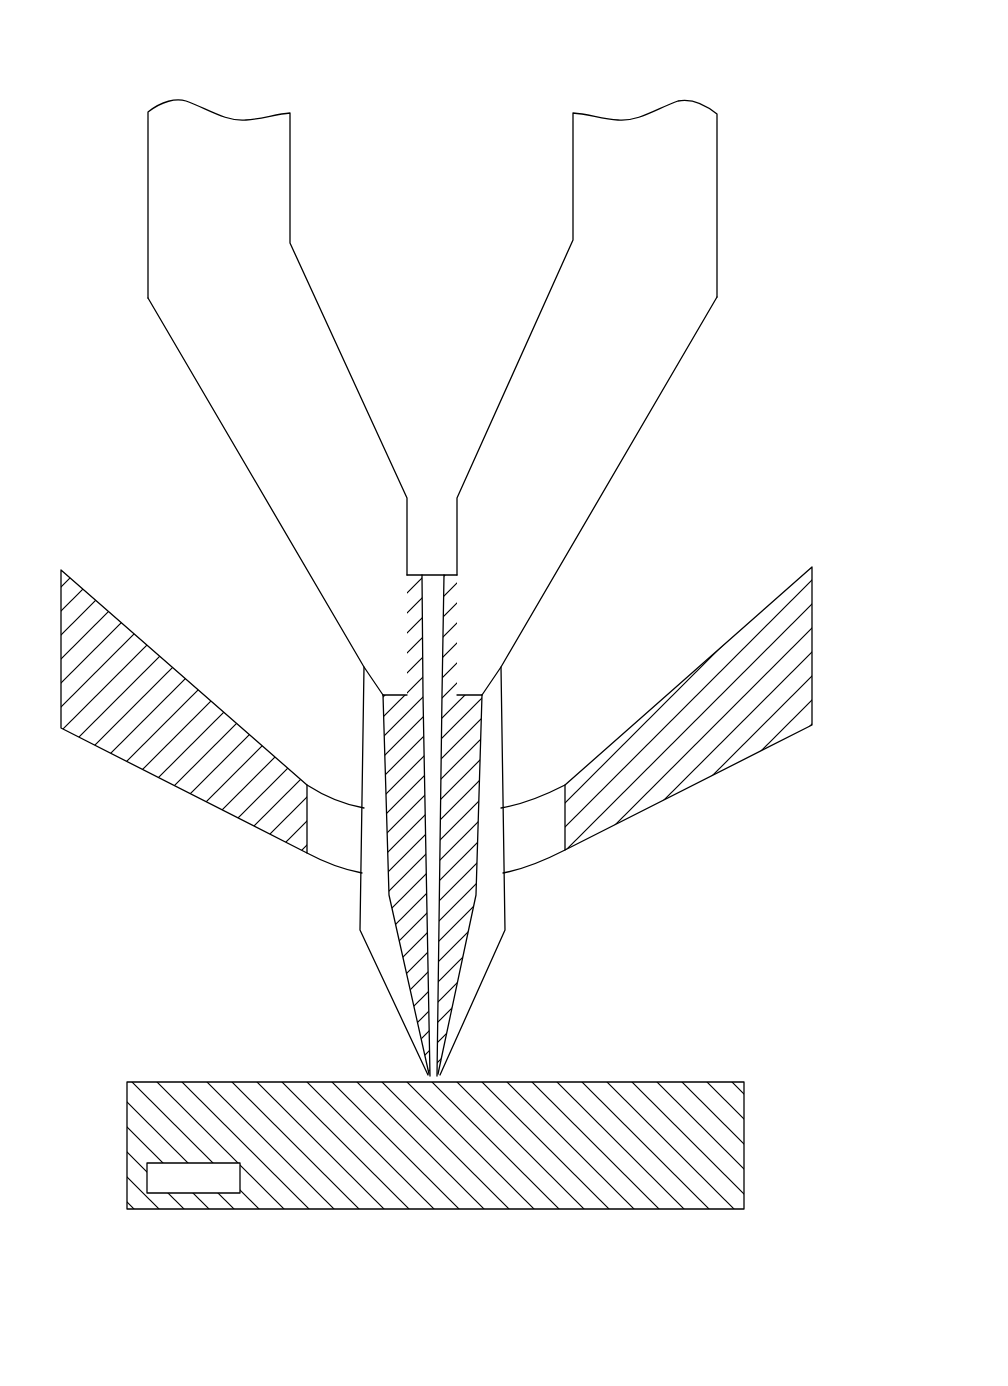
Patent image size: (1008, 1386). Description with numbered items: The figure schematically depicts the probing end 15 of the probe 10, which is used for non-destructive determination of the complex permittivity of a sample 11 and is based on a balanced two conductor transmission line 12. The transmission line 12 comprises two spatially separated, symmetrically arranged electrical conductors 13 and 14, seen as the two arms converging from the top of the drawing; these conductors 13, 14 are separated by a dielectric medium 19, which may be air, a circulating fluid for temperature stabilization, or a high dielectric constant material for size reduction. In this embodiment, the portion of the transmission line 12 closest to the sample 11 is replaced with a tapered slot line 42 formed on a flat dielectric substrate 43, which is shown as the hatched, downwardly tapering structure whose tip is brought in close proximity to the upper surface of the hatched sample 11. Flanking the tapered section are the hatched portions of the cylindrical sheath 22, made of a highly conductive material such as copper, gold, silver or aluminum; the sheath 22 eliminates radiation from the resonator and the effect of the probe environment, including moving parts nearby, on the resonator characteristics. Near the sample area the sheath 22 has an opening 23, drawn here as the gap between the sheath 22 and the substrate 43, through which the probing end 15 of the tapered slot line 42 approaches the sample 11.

The probe 10 is at (743, 68).
The sample 11 is at (745, 1154).
The balanced two conductor transmission line 12 is at (740, 211).
The electrical conductor 13 is at (256, 188).
The electrical conductor 14 is at (605, 211).
The probing end 15 is at (291, 901).
The dielectric medium 19 is at (433, 213).
The cylindrical sheath 22 is at (790, 637).
The opening 23 is at (528, 849).
The tapered slot line 42 is at (402, 746).
The flat dielectric substrate 43 is at (490, 764).